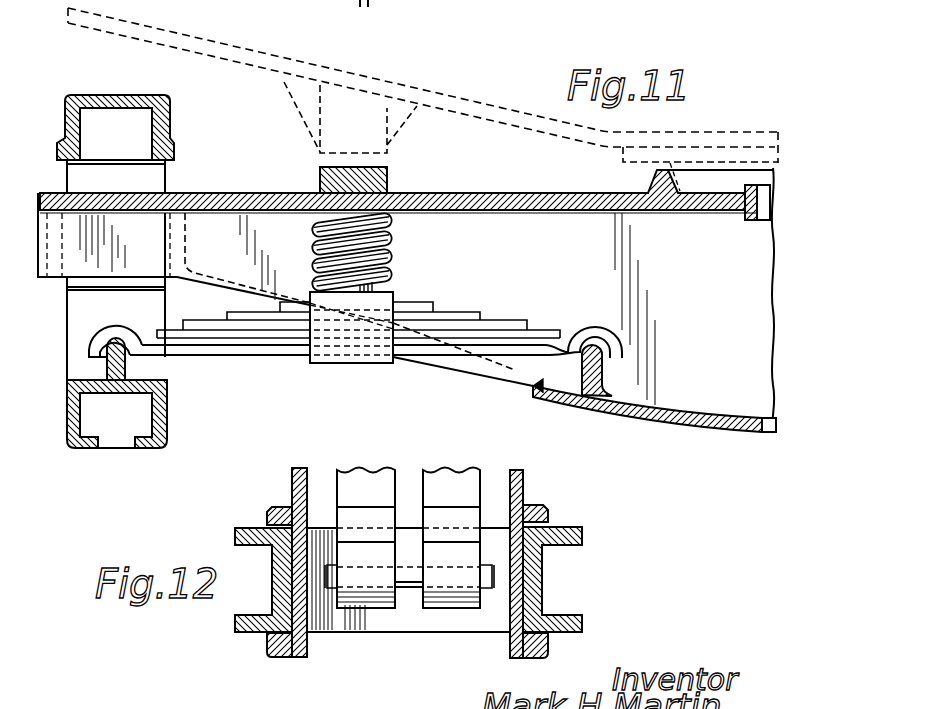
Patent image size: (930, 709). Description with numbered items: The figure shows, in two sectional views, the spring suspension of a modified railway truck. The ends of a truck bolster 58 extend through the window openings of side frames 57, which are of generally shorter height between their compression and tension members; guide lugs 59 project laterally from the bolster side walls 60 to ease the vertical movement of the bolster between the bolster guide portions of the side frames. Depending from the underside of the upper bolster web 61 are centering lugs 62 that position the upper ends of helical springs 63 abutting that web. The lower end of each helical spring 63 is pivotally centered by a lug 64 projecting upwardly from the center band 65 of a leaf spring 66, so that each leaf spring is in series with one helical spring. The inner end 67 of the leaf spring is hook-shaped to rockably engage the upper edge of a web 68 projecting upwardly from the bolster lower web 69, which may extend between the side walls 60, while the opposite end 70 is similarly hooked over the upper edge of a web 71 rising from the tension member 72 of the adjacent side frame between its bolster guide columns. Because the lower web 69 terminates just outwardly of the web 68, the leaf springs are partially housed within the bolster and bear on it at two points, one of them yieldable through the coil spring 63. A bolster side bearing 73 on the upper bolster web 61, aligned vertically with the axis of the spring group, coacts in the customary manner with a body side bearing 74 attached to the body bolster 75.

In FIG. 11, the side frame 57 is at (182, 118).
In FIG. 11, the truck bolster 58 is at (254, 180).
In FIG. 11, the guide lug 59 is at (183, 223).
In FIG. 12, the guide lug 59 is at (267, 512).
In FIG. 11, the side wall 60 is at (85, 265).
In FIG. 12, the side wall 60 is at (297, 578).
In FIG. 11, the upper bolster web 61 is at (498, 192).
In FIG. 11, the centering lug 62 is at (395, 232).
In FIG. 11, the helical spring 63 is at (395, 258).
In FIG. 11, the lug 64 is at (372, 288).
In FIG. 11, the center band 65 is at (343, 365).
In FIG. 11, the leaf spring 66 is at (423, 357).
In FIG. 12, the leaf spring 66 is at (432, 478).
In FIG. 11, the inner end 67 is at (591, 330).
In FIG. 11, the web 68 is at (602, 372).
In FIG. 11, the bolster lower web 69 is at (673, 420).
In FIG. 11, the opposite end 70 is at (97, 338).
In FIG. 12, the opposite end 70 is at (375, 606).
In FIG. 11, the web 71 is at (120, 367).
In FIG. 12, the web 71 is at (413, 580).
In FIG. 11, the tension member 72 is at (72, 417).
In FIG. 12, the tension member 72 is at (347, 632).
In FIG. 11, the bolster side bearing 73 is at (390, 178).
In FIG. 11, the body side bearing 74 is at (393, 140).
In FIG. 11, the body bolster 75 is at (413, 85).